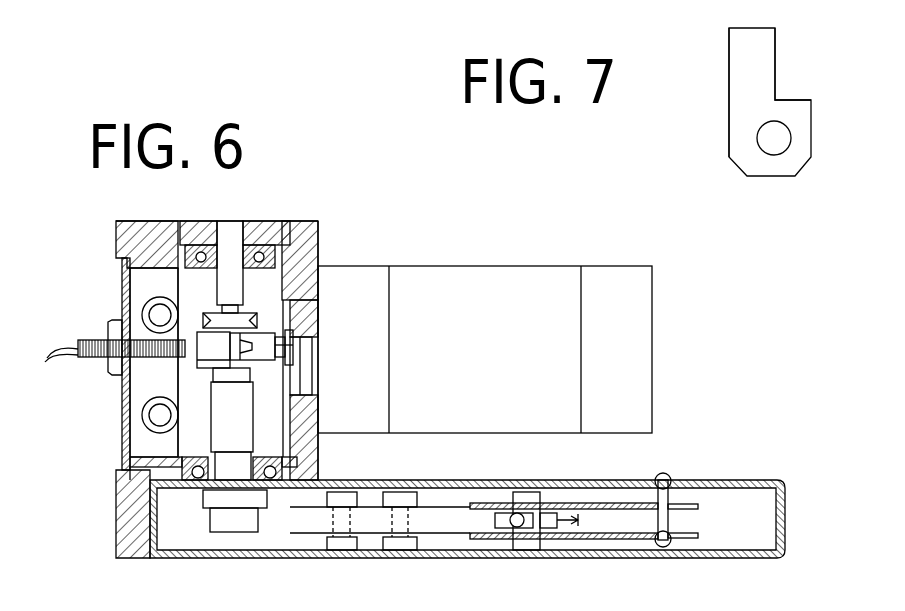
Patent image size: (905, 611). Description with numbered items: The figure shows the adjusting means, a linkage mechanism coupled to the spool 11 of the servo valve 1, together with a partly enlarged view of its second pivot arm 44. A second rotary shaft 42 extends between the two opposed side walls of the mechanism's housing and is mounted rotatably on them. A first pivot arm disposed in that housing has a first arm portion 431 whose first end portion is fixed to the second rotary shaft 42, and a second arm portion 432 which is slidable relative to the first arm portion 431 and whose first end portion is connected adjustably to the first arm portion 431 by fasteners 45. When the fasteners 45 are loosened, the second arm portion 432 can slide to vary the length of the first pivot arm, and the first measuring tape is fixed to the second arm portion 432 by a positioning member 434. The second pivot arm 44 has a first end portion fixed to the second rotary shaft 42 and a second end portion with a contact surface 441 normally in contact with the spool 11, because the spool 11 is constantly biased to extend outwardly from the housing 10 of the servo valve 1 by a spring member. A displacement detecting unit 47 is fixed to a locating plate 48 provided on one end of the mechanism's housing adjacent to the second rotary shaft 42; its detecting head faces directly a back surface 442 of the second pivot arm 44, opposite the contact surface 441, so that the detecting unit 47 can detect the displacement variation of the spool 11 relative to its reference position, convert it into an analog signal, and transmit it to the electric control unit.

In FIG. 6, the servo valve 1 is at (497, 262).
In FIG. 6, the housing 10 is at (612, 293).
In FIG. 6, the spool 11 is at (273, 333).
In FIG. 6, the second rotary shaft 42 is at (217, 425).
In FIG. 6, the first arm portion 431 is at (312, 505).
In FIG. 6, the second arm portion 432 is at (622, 530).
In FIG. 6, the positioning member 434 is at (506, 514).
In FIG. 6, the second pivot arm 44 is at (205, 345).
In FIG. 7, the second pivot arm 44 is at (723, 127).
In FIG. 6, the contact surface 441 is at (267, 347).
In FIG. 7, the contact surface 441 is at (775, 68).
In FIG. 6, the back surface 442 is at (200, 363).
In FIG. 7, the back surface 442 is at (729, 70).
In FIG. 6, the fasteners 45 is at (397, 493).
In FIG. 6, the displacement detecting unit 47 is at (95, 335).
In FIG. 6, the locating plate 48 is at (118, 377).